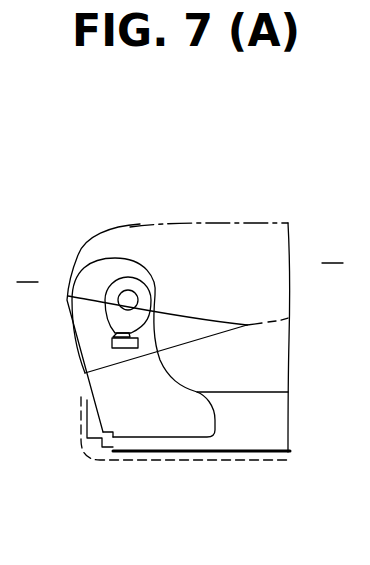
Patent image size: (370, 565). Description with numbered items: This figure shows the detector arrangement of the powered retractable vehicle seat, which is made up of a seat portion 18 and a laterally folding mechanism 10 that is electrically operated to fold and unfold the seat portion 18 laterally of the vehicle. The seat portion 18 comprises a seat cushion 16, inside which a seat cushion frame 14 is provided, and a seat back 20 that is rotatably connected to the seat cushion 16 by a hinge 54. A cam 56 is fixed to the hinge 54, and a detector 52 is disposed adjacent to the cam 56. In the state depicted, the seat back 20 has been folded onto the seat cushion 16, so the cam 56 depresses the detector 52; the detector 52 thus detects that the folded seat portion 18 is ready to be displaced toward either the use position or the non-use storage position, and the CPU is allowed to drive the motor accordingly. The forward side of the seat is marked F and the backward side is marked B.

The laterally folding mechanism 10 is at (283, 160).
The seat cushion frame 14 is at (215, 452).
The seat cushion 16 is at (291, 357).
The seat portion 18 is at (90, 195).
The seat back 20 is at (227, 228).
The detector 52 is at (112, 341).
The hinge 54 is at (130, 296).
The cam 56 is at (142, 305).